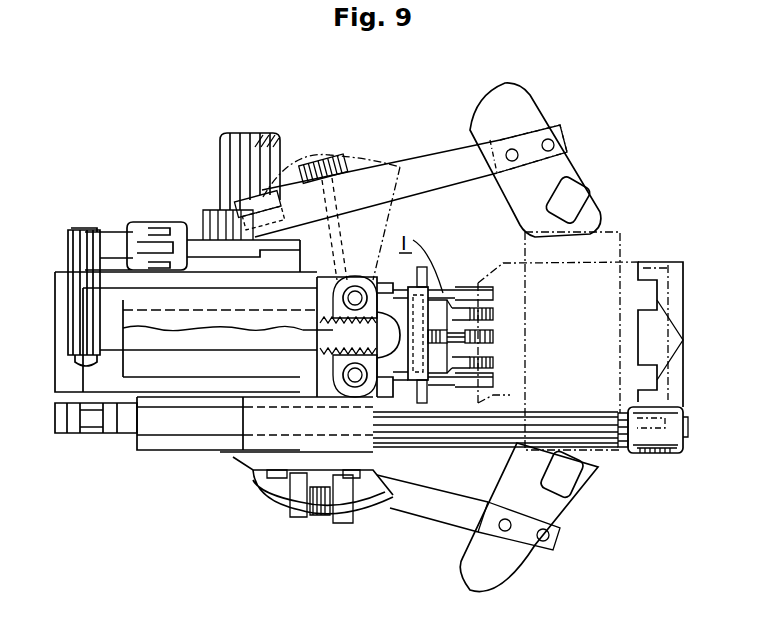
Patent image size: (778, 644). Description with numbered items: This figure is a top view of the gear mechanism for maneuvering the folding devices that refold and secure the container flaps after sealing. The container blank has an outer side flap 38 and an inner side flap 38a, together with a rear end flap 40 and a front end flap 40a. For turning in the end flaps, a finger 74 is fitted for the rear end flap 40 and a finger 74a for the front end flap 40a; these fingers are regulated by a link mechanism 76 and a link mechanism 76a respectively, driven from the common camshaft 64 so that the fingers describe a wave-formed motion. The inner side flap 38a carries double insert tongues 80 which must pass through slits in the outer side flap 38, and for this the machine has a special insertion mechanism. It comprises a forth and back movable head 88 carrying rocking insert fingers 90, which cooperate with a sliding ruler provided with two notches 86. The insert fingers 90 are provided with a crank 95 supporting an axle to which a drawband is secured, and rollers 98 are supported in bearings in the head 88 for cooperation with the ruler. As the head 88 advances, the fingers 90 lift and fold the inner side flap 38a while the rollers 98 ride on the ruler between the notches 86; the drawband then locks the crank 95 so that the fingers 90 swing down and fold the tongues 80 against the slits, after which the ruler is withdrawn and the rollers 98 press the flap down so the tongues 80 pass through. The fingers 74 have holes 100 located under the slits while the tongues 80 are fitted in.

The outer side flap 38 is at (627, 262).
The inner side flap 38a is at (515, 262).
The rear end flap 40 is at (610, 232).
The front end flap 40a is at (617, 453).
The common camshaft 64 is at (233, 150).
The finger 74 is at (543, 117).
The finger 74a is at (567, 512).
The link mechanism 76 is at (333, 317).
The link mechanism 76a is at (337, 363).
The insert tongues 80 is at (483, 285).
The notches 86 is at (682, 340).
The head 88 is at (437, 385).
The insert fingers 90 is at (483, 293).
The crank 95 is at (447, 345).
The rollers 98 is at (495, 314).
The holes 100 is at (570, 188).